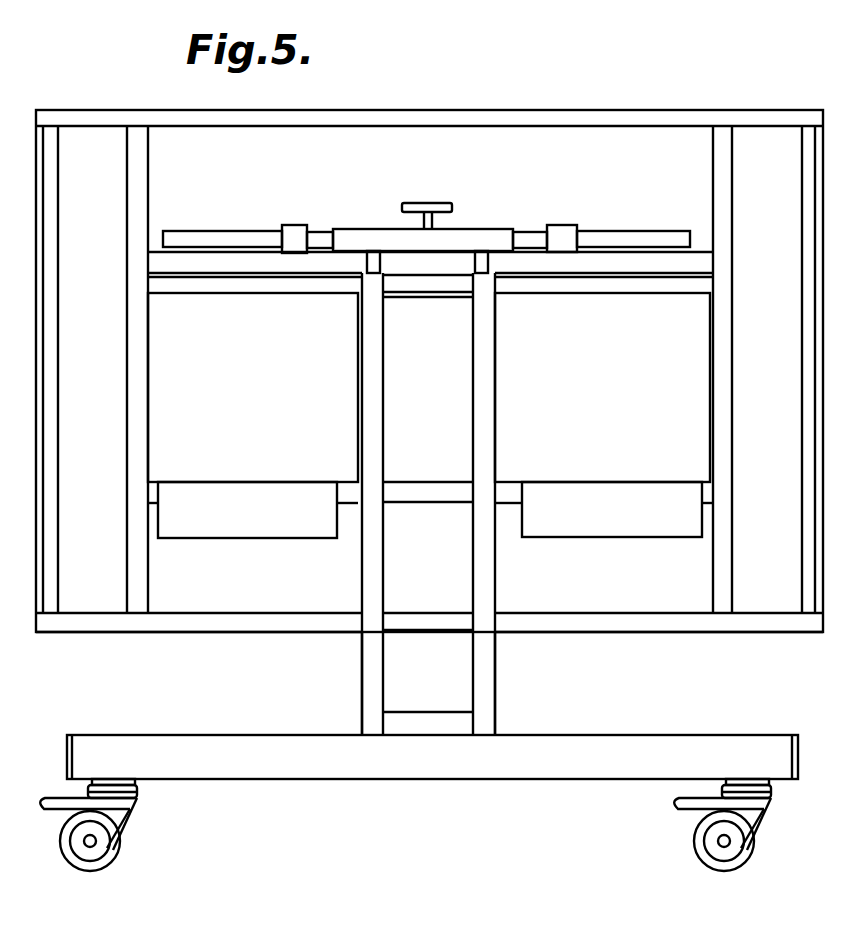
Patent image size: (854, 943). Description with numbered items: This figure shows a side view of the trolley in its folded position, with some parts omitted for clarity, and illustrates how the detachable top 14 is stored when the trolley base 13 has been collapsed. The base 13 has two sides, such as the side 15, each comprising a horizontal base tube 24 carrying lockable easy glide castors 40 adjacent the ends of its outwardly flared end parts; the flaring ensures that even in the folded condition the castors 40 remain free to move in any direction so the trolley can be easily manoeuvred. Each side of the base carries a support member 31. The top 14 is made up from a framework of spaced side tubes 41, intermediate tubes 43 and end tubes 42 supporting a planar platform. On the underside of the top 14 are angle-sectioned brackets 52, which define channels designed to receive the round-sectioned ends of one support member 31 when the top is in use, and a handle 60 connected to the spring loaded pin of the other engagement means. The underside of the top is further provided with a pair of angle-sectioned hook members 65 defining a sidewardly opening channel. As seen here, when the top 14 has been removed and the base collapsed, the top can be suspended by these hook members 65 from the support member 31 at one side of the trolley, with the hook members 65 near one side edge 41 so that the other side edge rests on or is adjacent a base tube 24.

The base 13 is at (360, 716).
The detachable top 14 is at (102, 387).
The side 15 is at (457, 380).
The horizontal base tube 24 is at (315, 777).
The support member 31 is at (220, 233).
The lockable easy glide castor 40 is at (120, 845).
The side tube 41 is at (248, 628).
The end tube 42 is at (57, 578).
The intermediate tube 43 is at (137, 452).
The angle-sectioned bracket 52 is at (287, 487).
The handle 60 is at (437, 203).
The angle-sectioned hook member 65 is at (297, 223).